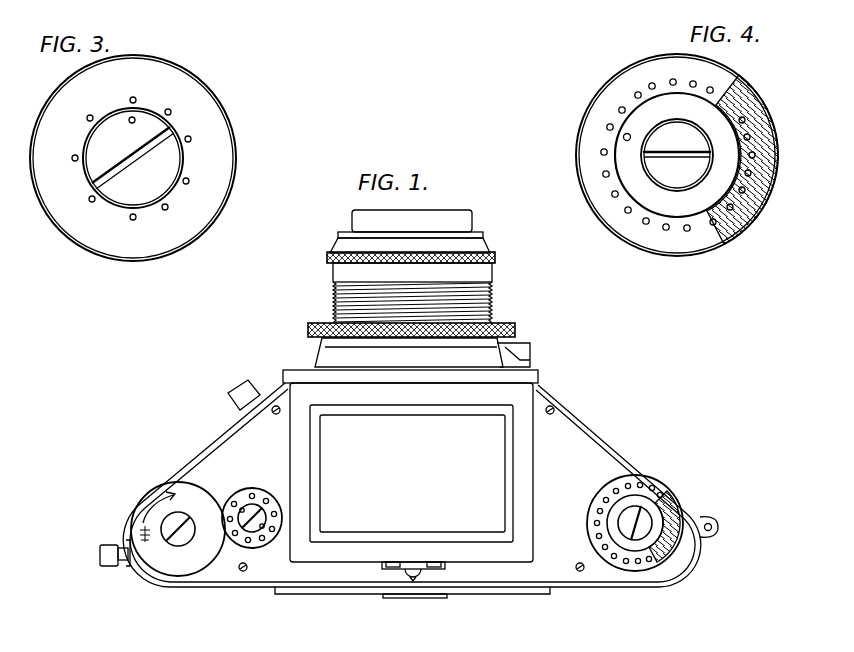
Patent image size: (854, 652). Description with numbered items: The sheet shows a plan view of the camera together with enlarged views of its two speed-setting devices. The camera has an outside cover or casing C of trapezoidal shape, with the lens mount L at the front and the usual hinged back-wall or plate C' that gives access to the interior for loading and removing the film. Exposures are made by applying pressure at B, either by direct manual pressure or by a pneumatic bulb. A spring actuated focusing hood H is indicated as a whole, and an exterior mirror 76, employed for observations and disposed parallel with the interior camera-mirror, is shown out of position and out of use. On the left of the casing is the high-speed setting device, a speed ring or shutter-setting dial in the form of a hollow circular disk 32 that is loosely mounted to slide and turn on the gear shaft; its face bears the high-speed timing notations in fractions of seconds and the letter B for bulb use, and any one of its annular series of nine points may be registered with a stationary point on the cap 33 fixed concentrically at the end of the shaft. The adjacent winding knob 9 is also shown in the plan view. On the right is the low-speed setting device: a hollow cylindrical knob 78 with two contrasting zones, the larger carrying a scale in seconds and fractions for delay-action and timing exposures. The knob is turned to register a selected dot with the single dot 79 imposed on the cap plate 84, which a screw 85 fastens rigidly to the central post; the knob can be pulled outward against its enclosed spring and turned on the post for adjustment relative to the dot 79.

In FIG. 1, the film winding knob 9 is at (168, 563).
In FIG. 3, the speed ring or shutter-setting dial 32 is at (192, 77).
In FIG. 1, the speed ring or shutter-setting dial 32 is at (275, 467).
In FIG. 3, the cap 33 is at (133, 158).
In FIG. 1, the cap 33 is at (257, 530).
In FIG. 1, the mirror 76 is at (411, 473).
In FIG. 4, the knob 78 is at (678, 152).
In FIG. 1, the knob 78 is at (682, 477).
In FIG. 4, the dot 79 is at (624, 138).
In FIG. 1, the dot 79 is at (648, 495).
In FIG. 4, the cap plate 84 is at (677, 155).
In FIG. 4, the screw 85 is at (677, 155).
In FIG. 1, the screw 85 is at (630, 522).
In FIG. 1, the lens mount L is at (421, 288).
In FIG. 1, the pressure point B is at (245, 380).
In FIG. 1, the outside cover or casing C is at (412, 478).
In FIG. 1, the hinged back-wall or plate C' is at (412, 611).
In FIG. 1, the focusing hood H is at (523, 477).